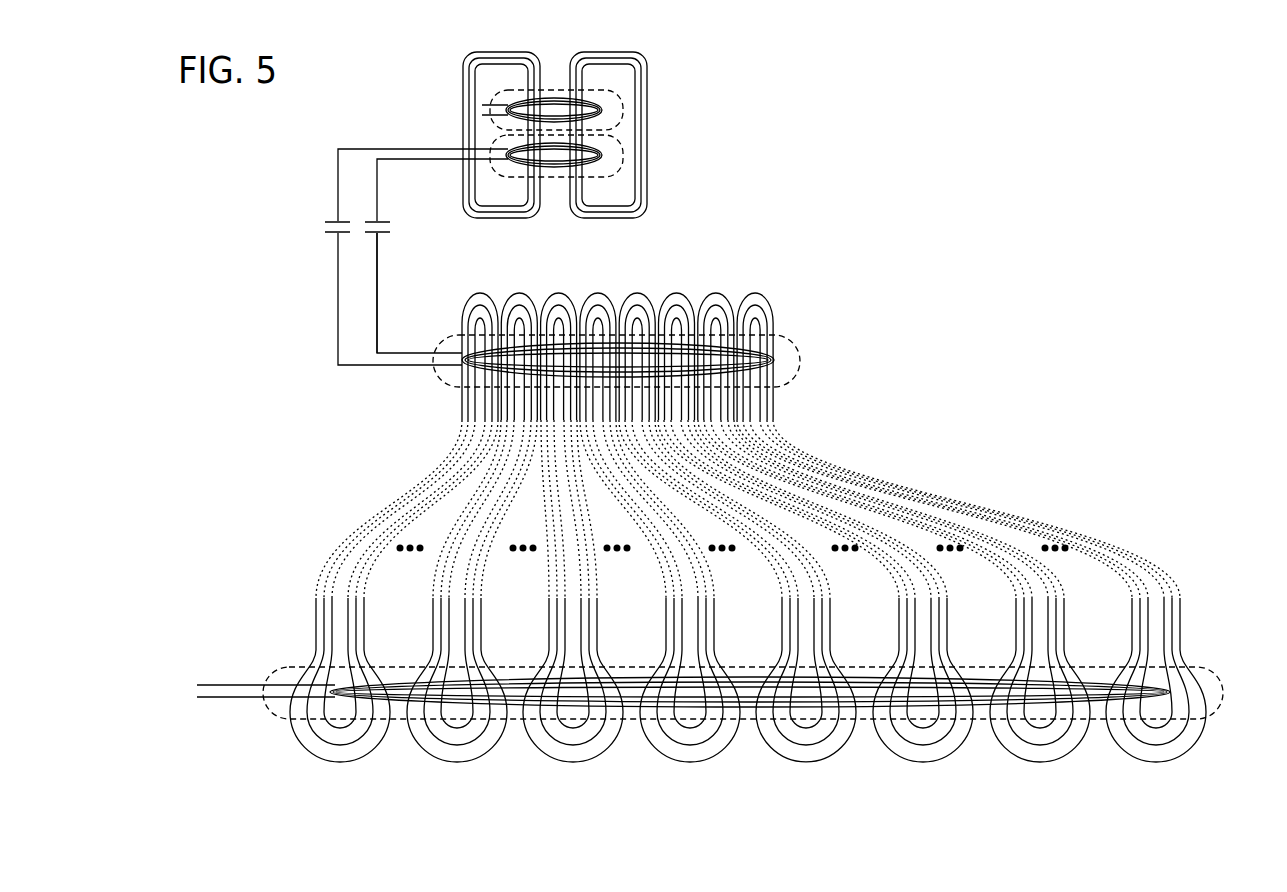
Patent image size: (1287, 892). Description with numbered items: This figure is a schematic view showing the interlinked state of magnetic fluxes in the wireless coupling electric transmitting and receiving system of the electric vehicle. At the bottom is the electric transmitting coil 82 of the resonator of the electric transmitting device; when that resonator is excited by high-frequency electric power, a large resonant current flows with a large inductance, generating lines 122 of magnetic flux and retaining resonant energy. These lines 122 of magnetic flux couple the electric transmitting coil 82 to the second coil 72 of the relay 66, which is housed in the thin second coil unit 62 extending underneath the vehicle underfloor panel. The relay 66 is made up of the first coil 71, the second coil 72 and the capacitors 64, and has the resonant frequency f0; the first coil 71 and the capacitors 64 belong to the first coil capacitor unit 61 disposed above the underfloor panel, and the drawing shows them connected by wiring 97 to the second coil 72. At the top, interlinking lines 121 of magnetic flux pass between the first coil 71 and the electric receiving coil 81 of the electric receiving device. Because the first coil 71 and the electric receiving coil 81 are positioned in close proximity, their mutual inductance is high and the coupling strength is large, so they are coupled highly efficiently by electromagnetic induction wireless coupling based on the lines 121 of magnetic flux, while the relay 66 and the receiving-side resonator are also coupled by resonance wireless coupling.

The first coil capacitor unit 61 is at (406, 243).
The second coil unit 62 is at (437, 345).
The capacitors 64 is at (322, 230).
The relay 66 is at (423, 293).
The first coil 71 is at (558, 185).
The second coil 72 is at (800, 372).
The electric receiving coil 81 is at (548, 88).
The electric transmitting coil 82 is at (634, 675).
The wiring 97 is at (375, 333).
The lines of magnetic flux 121 is at (462, 94).
The lines of magnetic flux 122 is at (552, 292).